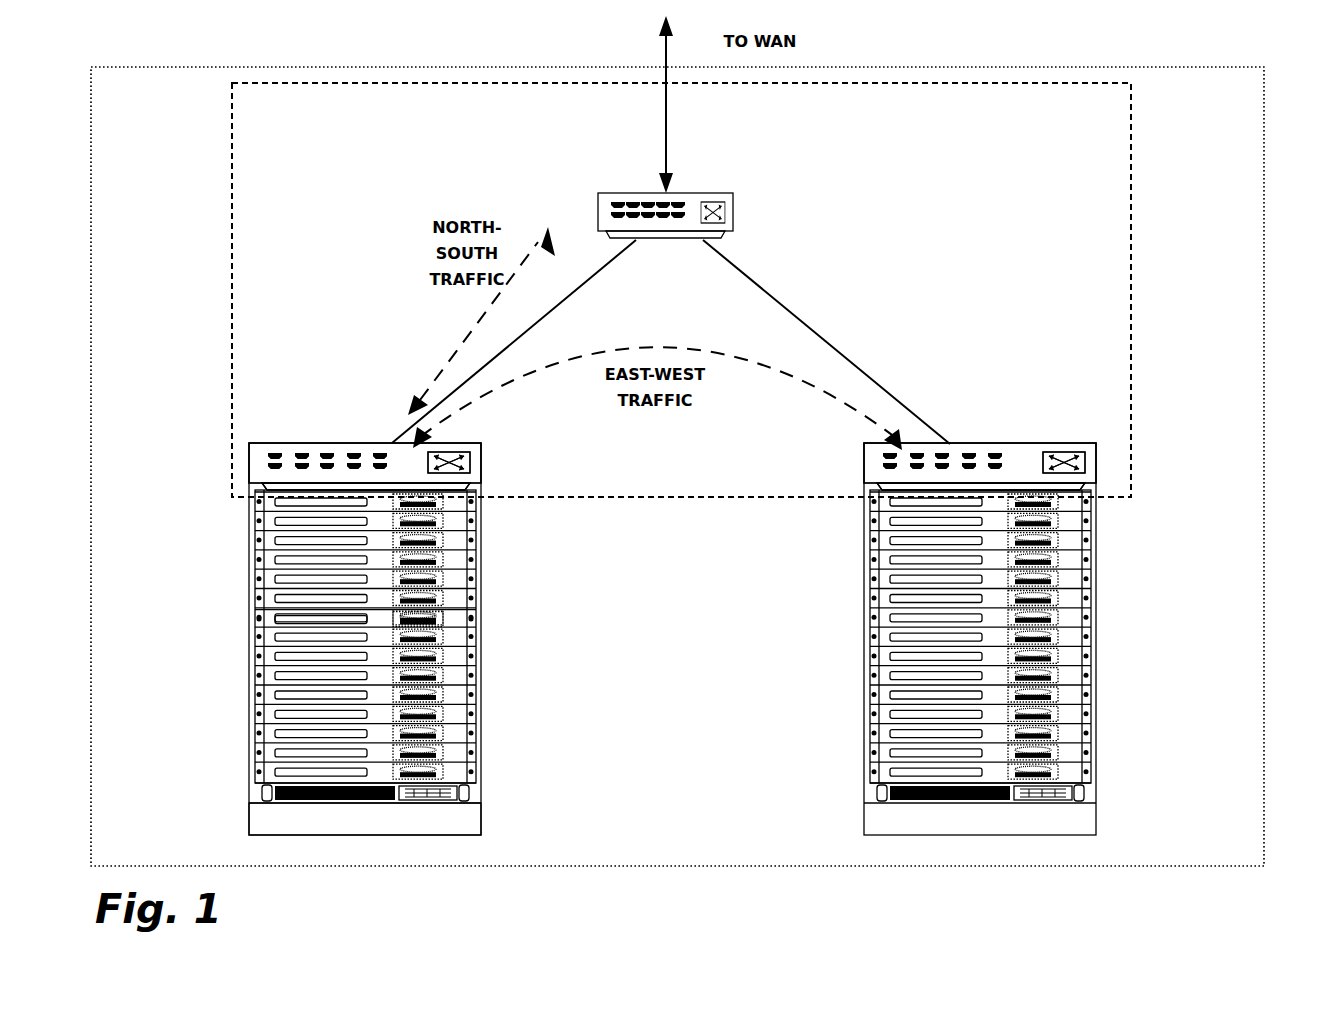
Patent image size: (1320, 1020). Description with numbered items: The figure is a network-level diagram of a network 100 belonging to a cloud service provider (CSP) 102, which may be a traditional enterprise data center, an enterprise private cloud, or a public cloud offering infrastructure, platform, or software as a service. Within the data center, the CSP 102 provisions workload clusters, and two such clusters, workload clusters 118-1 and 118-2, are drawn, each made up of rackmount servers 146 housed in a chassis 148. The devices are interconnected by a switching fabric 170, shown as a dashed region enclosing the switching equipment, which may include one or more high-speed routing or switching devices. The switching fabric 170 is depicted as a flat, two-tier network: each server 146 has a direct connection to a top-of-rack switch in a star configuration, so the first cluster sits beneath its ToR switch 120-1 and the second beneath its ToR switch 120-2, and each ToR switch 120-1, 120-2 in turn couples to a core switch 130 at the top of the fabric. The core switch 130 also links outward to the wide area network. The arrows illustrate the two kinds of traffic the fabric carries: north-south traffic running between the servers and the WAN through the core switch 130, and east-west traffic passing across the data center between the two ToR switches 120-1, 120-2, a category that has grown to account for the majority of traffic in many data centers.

The network 100 is at (677, 466).
The cloud service provider (CSP) 102 is at (1264, 200).
The workload cluster 118-1 is at (244, 622).
The workload cluster 118-2 is at (1100, 692).
The top-of-rack (ToR) switch 120-1 is at (382, 443).
The top-of-rack (ToR) switch 120-2 is at (990, 443).
The core switch 130 is at (735, 212).
The rackmount server 146 is at (482, 620).
The chassis 148 is at (483, 831).
The switching fabric 170 is at (1133, 293).